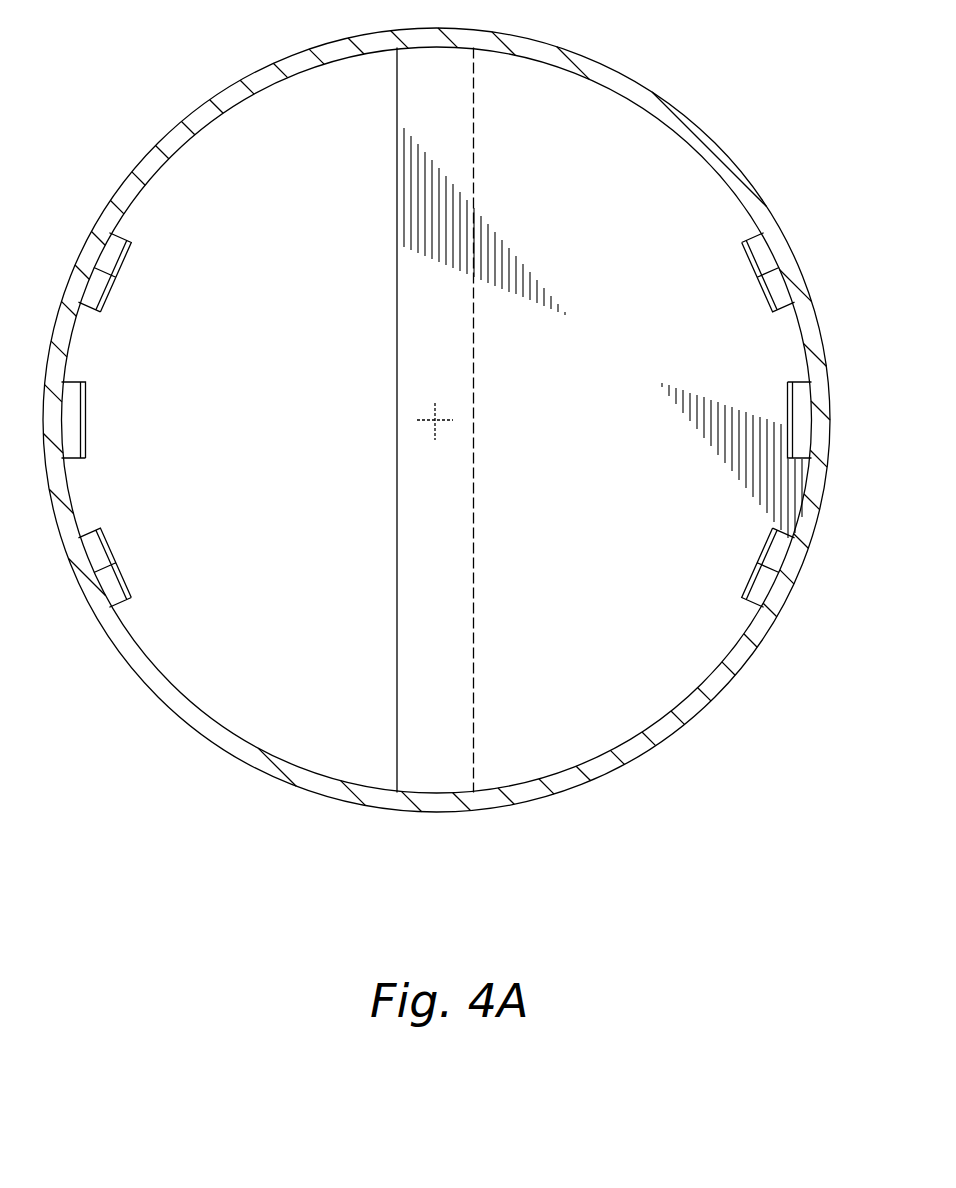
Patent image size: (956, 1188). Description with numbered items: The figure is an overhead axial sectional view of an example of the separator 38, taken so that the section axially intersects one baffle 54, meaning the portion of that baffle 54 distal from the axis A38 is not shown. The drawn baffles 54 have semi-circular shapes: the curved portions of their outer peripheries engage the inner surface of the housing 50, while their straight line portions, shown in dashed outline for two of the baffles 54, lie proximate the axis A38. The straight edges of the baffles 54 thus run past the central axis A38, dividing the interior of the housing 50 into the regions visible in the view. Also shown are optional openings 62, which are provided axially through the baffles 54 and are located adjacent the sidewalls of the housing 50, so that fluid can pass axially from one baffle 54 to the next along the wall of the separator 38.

The separator 38 is at (132, 74).
The housing 50 is at (618, 71).
The baffle 54 is at (519, 420).
The opening 62 is at (110, 257).
The axis A38 is at (437, 418).